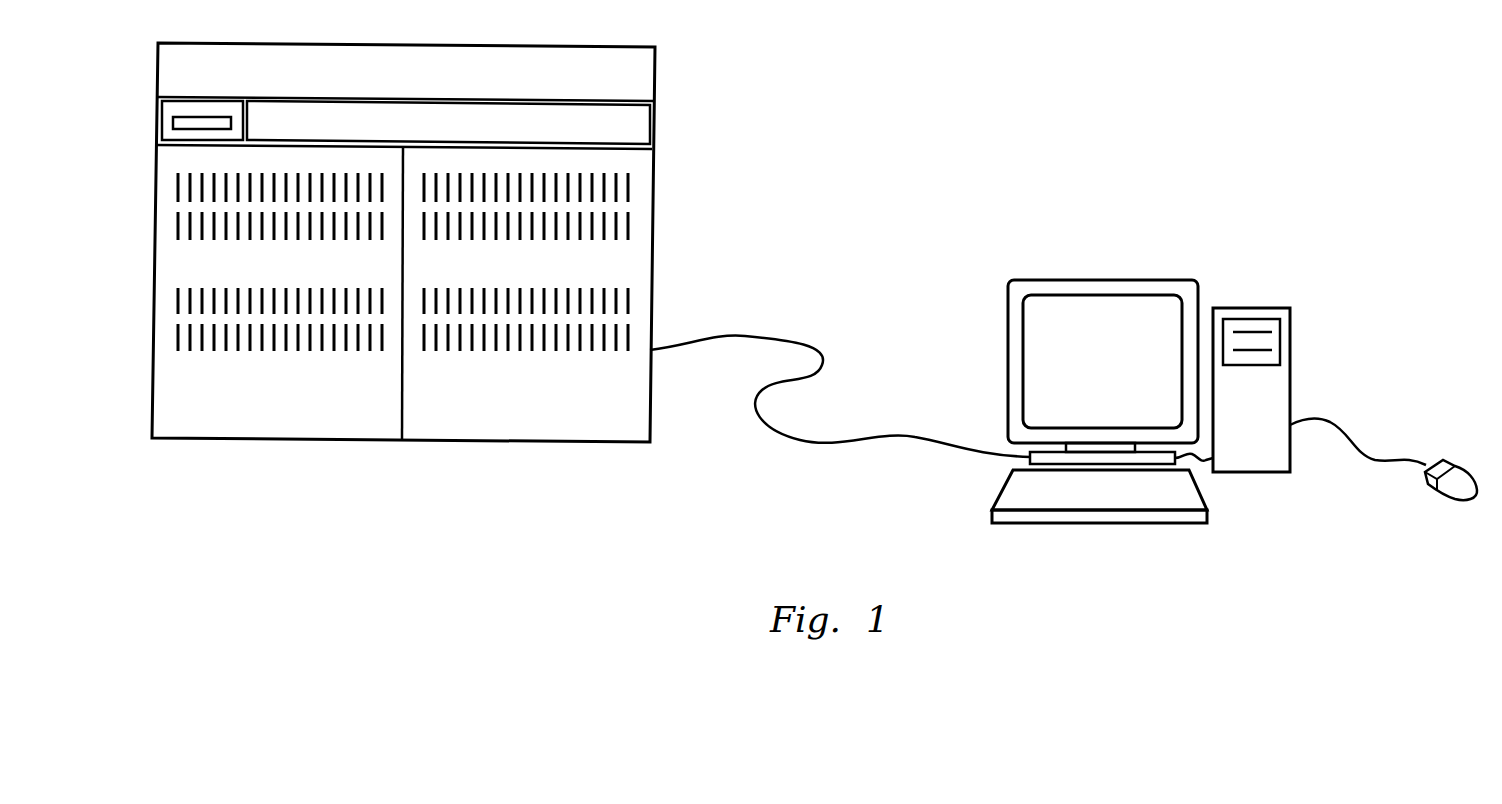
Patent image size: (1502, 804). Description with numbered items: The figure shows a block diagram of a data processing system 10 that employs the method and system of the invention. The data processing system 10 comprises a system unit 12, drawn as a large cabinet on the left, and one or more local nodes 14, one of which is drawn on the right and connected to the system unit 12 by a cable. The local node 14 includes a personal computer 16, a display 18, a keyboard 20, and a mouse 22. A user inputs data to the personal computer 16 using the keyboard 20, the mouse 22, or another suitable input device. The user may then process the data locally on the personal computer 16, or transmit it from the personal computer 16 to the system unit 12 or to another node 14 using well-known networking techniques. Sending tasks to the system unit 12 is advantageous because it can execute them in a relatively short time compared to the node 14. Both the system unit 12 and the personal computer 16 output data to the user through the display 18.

The data processing system 10 is at (827, 166).
The system unit 12 is at (655, 211).
The local node 14 is at (1235, 435).
The personal computer 16 is at (1291, 318).
The display 18 is at (1163, 280).
The keyboard 20 is at (1003, 523).
The mouse 22 is at (1463, 462).